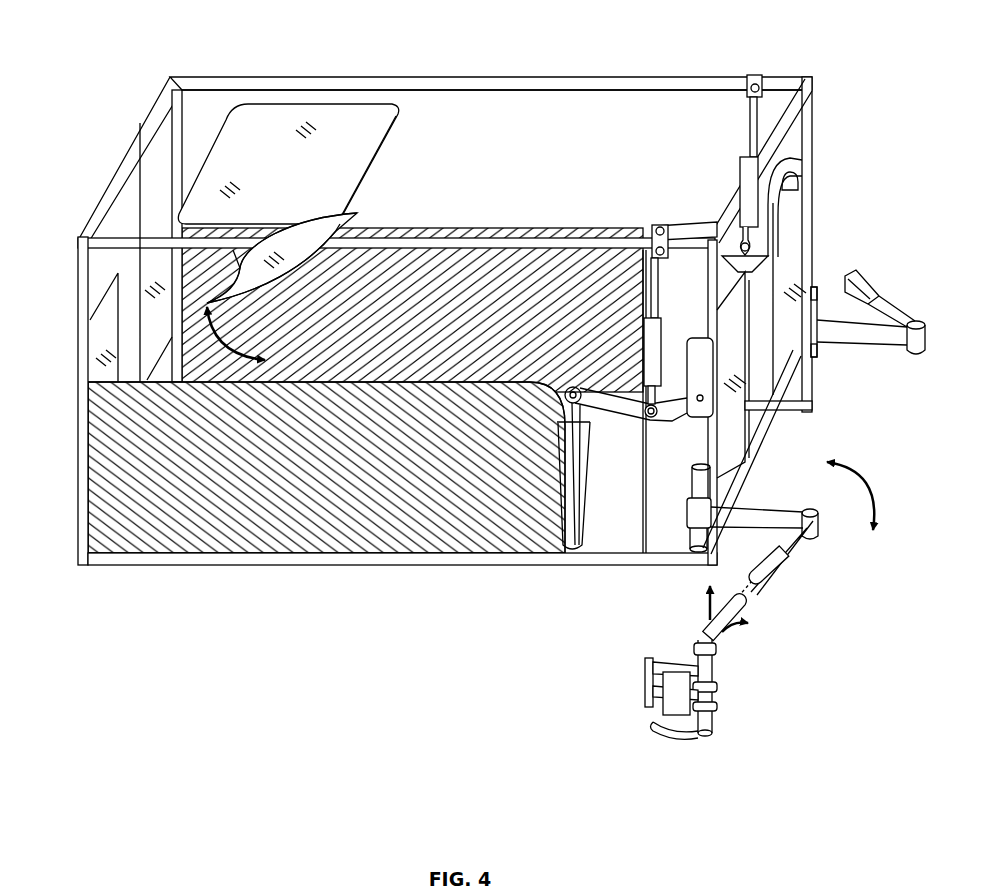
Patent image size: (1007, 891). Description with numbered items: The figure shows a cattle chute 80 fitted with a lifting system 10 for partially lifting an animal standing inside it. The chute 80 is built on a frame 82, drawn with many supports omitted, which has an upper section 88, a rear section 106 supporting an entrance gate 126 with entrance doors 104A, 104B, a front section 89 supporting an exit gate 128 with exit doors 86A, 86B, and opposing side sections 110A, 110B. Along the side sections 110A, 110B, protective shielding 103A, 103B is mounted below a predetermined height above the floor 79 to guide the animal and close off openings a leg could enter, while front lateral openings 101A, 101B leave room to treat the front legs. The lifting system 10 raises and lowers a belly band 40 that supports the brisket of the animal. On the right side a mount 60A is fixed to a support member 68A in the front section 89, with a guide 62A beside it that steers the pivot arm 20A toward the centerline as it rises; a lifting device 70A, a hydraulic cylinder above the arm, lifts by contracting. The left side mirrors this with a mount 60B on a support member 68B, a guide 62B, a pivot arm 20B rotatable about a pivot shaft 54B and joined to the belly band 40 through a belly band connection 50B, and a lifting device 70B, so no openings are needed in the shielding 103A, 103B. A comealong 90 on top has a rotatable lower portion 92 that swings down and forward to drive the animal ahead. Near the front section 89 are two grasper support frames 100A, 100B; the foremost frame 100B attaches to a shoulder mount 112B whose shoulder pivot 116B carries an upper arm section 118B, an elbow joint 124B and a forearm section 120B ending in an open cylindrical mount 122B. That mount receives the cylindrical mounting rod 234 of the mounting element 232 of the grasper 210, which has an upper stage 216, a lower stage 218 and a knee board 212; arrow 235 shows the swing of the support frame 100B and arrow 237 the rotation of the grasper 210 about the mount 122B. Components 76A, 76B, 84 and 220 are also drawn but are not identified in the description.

The lifting system 10 is at (686, 338).
The pivot arm 20A is at (665, 228).
The pivot arm 20B is at (583, 390).
The belly band 40 is at (603, 494).
The belly band connection 50B is at (660, 228).
The pivot shaft 54B is at (778, 447).
The mount 60A is at (798, 178).
The mount 60B is at (697, 336).
The guide 62A is at (793, 243).
The guide 62B is at (697, 420).
The support member 68A is at (808, 122).
The support member 68B is at (717, 313).
The lifting device 70A is at (740, 167).
The lifting device 70B is at (652, 362).
The upper actuator mount 76A is at (746, 92).
The lower actuator mount 76B is at (656, 250).
The floor 79 is at (620, 537).
The cattle chute 80 is at (230, 80).
The frame 82 is at (322, 77).
The rear right post 84 is at (809, 145).
The exit door 86A is at (797, 255).
The exit door 86B is at (740, 428).
The upper section 88 is at (563, 77).
The front section 89 is at (800, 452).
The comealong 90 is at (355, 104).
The rotatable lower portion 92 is at (345, 213).
The front-leg grasper support frame 100A is at (888, 340).
The front-leg grasper support frame 100B is at (808, 540).
The front lateral opening 101A is at (757, 392).
The front lateral opening 101B is at (655, 532).
The protective shielding 103A is at (487, 263).
The protective shielding 103B is at (365, 493).
The entrance door 104A is at (150, 212).
The entrance door 104B is at (105, 330).
The rear section 106 is at (85, 452).
The side section 110A is at (762, 408).
The side section 110B is at (220, 558).
The shoulder mount 112B is at (712, 488).
The shoulder pivot 116B is at (765, 507).
The upper arm section 118B is at (723, 527).
The forearm section 120B is at (787, 565).
The open cylindrical mount 122B is at (775, 585).
The elbow joint 124B is at (818, 530).
The entrance gate 126 is at (127, 343).
The exit gate 128 is at (765, 367).
The grasper 210 is at (714, 678).
The knee board 212 is at (663, 708).
The upper stage 216 is at (645, 663).
The lower stage 218 is at (683, 735).
The lower tool ring 220 is at (715, 713).
The mounting element 232 is at (697, 625).
The cylindrical mounting rod 234 is at (735, 610).
The arrow 235 is at (869, 500).
The arrow 237 is at (727, 625).